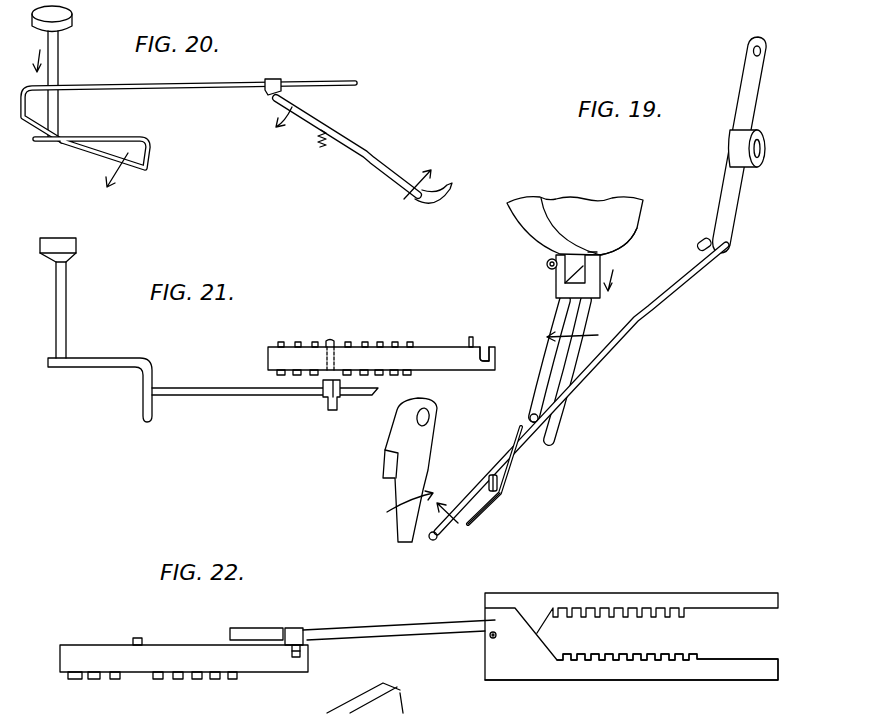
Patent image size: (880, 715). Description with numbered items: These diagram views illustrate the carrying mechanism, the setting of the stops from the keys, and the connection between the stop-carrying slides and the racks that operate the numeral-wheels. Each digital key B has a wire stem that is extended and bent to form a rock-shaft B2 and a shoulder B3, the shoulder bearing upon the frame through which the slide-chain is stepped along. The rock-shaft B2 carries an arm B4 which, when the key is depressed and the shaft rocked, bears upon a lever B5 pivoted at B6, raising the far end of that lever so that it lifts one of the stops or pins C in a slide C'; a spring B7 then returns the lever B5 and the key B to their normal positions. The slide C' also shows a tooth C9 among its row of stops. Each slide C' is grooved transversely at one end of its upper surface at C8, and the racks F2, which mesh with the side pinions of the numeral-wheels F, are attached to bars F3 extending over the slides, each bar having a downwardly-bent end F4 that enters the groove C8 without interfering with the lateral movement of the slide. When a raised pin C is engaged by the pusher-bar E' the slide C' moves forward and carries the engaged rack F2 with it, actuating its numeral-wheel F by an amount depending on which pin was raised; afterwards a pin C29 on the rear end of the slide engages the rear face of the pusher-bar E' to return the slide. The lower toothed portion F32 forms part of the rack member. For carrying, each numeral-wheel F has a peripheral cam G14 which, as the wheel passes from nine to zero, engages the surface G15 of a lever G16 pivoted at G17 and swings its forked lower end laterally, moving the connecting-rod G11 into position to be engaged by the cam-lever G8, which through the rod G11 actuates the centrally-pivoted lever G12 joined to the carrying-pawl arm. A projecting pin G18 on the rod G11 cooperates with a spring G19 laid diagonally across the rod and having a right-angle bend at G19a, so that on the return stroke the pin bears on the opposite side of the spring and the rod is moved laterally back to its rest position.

In FIG. 20, the digital key B is at (72, 26).
In FIG. 21, the digital key B is at (77, 246).
In FIG. 20, the rock-shaft B2 is at (197, 93).
In FIG. 21, the rock-shaft B2 is at (229, 387).
In FIG. 20, the shoulder B3 is at (96, 136).
In FIG. 21, the shoulder B3 is at (104, 356).
In FIG. 20, the arm B4 is at (307, 103).
In FIG. 21, the lever B5 is at (327, 403).
In FIG. 20, the pivot B6 is at (362, 161).
In FIG. 20, the spring B7 is at (315, 142).
In FIG. 22, the stop or pin C is at (141, 628).
In FIG. 21, the slide C' is at (381, 365).
In FIG. 22, the slide C' is at (184, 662).
In FIG. 21, the groove C8 is at (483, 343).
In FIG. 21, the tooth C9 is at (287, 344).
In FIG. 21, the pin C29 is at (471, 337).
In FIG. 22, the pin C29 is at (289, 627).
In FIG. 22, the pusher-bar E' is at (256, 619).
In FIG. 19, the numeral-wheel F is at (575, 226).
In FIG. 22, the rack F2 is at (641, 593).
In FIG. 22, the bar F3 is at (357, 630).
In FIG. 22, the downwardly-bent end F4 is at (301, 652).
In FIG. 22, the lower toothed arm F32 is at (664, 671).
In FIG. 19, the cam-lever G8 is at (420, 453).
In FIG. 19, the connecting-rod G11 is at (577, 407).
In FIG. 19, the centrally-pivoted lever G12 is at (736, 205).
In FIG. 19, the peripheral cam G14 is at (633, 237).
In FIG. 19, the surface G15 is at (594, 253).
In FIG. 19, the lever G16 is at (583, 315).
In FIG. 19, the pivot G17 is at (547, 265).
In FIG. 19, the projecting pin G18 is at (498, 482).
In FIG. 19, the spring G19 is at (522, 427).
In FIG. 19, the right-angle bend G19a is at (503, 487).